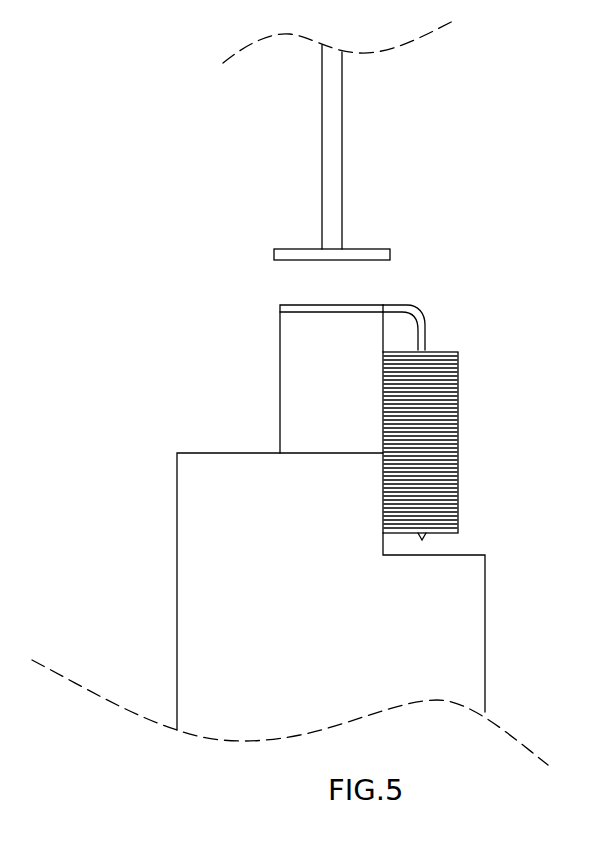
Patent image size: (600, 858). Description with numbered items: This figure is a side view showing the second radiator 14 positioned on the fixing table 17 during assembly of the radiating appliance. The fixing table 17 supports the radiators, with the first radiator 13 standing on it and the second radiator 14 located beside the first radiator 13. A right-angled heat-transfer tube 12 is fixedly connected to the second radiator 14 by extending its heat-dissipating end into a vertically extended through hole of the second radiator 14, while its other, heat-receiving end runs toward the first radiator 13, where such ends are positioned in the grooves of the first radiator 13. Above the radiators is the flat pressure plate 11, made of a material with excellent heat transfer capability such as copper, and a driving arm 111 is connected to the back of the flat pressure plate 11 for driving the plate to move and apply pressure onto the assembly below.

The driving arm 111 is at (332, 200).
The flat pressure plate 11 is at (372, 252).
The heat-transfer tube 12 is at (403, 312).
The first radiator 13 is at (301, 333).
The second radiator 14 is at (440, 383).
The fixing table 17 is at (195, 488).